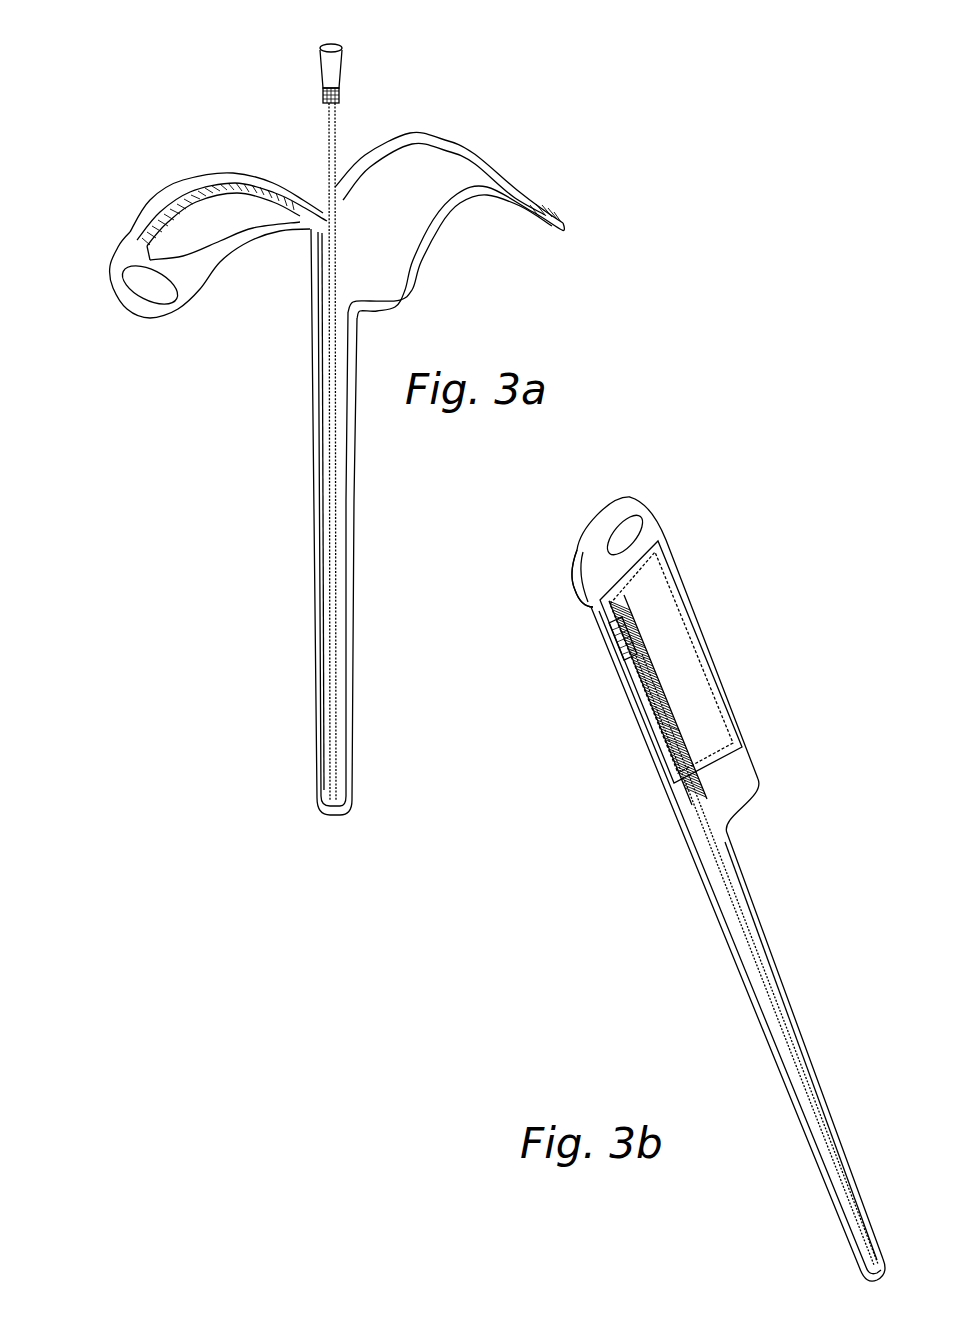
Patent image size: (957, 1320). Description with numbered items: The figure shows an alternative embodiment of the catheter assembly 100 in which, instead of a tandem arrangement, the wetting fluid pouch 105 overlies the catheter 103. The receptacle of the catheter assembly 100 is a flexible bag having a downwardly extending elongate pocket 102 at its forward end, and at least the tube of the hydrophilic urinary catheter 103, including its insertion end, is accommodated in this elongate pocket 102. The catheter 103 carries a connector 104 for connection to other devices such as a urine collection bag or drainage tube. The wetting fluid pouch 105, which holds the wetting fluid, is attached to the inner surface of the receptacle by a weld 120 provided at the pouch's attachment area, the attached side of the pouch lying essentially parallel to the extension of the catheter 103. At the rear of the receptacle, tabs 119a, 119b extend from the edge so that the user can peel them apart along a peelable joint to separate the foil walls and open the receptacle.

In FIG. 3A, the catheter assembly 100 is at (285, 470).
In FIG. 3B, the catheter assembly 100 is at (665, 869).
In FIG. 3A, the elongate pocket 102 is at (323, 663).
In FIG. 3B, the elongate pocket 102 is at (782, 1060).
In FIG. 3A, the hydrophilic urinary catheter 103 is at (338, 130).
In FIG. 3B, the hydrophilic urinary catheter 103 is at (762, 968).
In FIG. 3A, the connector 104 is at (323, 73).
In FIG. 3B, the connector 104 is at (662, 595).
In FIG. 3A, the wetting fluid pouch 105 is at (208, 197).
In FIG. 3B, the wetting fluid pouch 105 is at (672, 665).
In FIG. 3A, the tab 119a is at (130, 257).
In FIG. 3B, the tab 119a is at (637, 511).
In FIG. 3A, the tab 119b is at (537, 205).
In FIG. 3B, the tab 119b is at (580, 560).
In FIG. 3A, the weld 120 is at (257, 217).
In FIG. 3B, the weld 120 is at (667, 716).